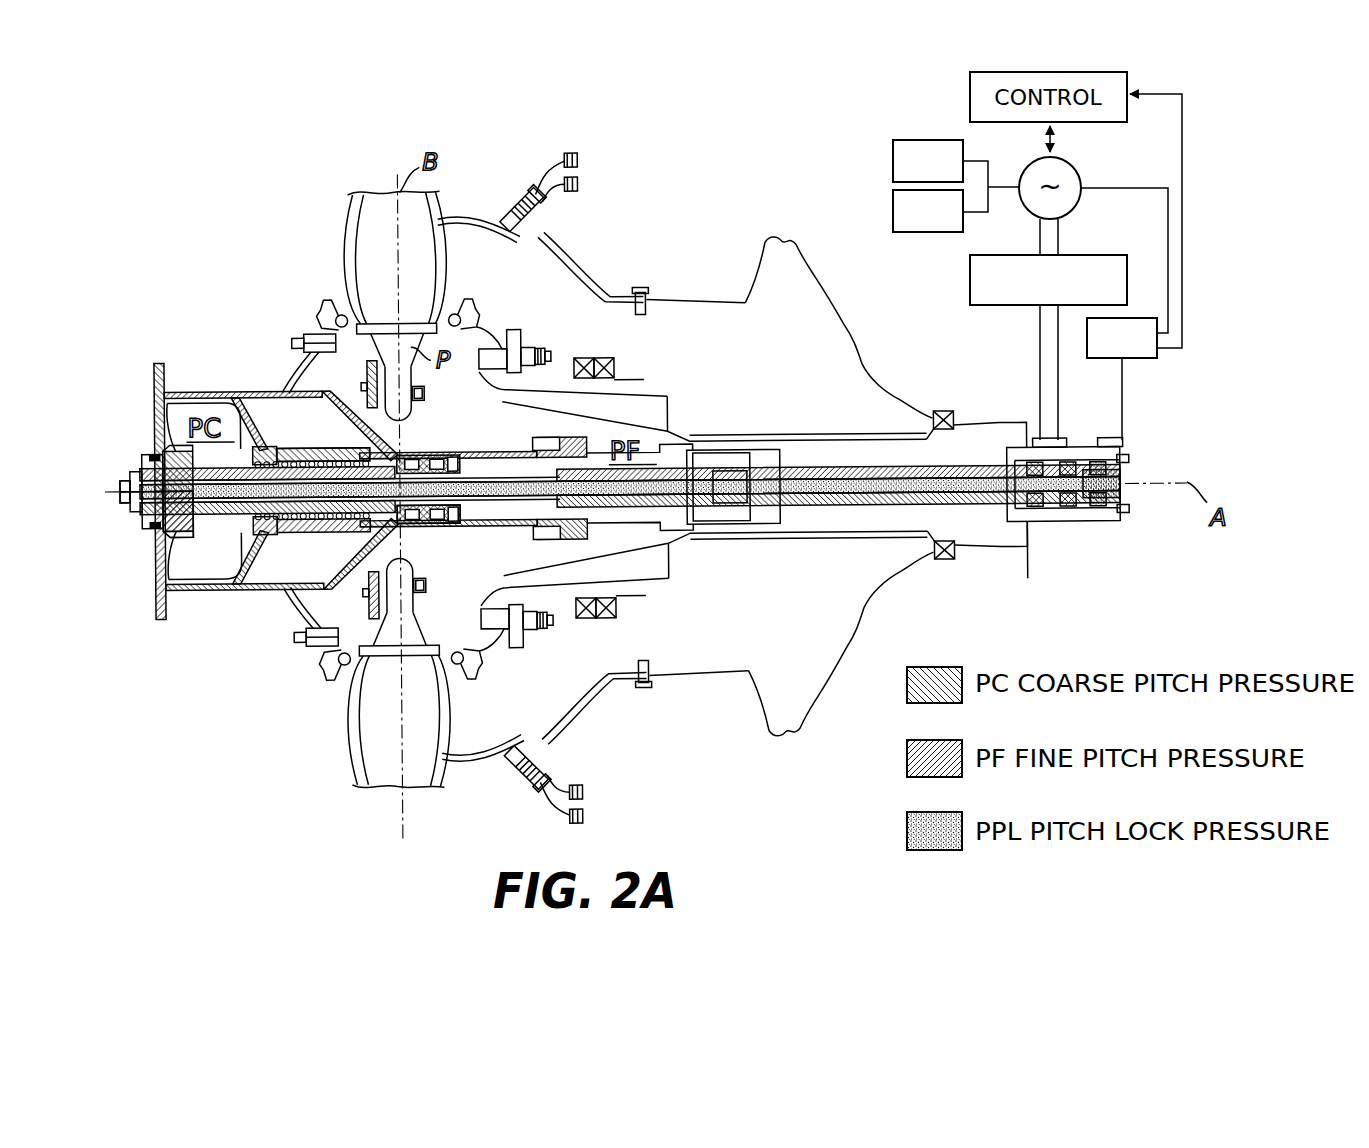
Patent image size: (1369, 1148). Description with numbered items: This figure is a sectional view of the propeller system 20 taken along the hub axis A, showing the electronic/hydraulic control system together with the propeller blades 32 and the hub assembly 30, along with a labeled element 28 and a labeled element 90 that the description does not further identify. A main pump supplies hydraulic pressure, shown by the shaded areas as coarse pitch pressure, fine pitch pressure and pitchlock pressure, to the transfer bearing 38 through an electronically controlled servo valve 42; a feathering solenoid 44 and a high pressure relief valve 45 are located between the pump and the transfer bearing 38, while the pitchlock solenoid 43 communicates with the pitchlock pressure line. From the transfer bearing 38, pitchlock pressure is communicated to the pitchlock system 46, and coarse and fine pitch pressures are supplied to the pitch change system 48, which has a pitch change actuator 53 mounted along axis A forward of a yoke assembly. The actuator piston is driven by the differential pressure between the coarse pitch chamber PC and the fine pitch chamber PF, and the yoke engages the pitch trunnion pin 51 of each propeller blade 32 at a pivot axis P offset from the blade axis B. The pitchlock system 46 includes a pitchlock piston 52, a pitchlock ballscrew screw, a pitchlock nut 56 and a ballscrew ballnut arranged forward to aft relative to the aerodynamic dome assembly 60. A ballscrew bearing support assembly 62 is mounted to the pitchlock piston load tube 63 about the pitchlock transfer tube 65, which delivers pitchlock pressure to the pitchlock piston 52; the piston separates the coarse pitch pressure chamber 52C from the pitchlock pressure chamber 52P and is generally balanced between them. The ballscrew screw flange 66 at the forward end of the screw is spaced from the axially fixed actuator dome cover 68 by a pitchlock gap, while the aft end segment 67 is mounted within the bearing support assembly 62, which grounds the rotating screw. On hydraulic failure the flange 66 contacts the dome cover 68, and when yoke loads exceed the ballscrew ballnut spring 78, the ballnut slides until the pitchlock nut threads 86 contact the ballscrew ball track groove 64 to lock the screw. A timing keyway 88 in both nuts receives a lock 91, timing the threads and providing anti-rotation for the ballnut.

The propeller system 20 is at (797, 216).
The support frame 28 is at (712, 427).
The hub assembly 30 is at (533, 350).
The propeller blades 32 is at (393, 264).
The transfer bearing 38 is at (1079, 543).
The electronically controlled servo valve 42 is at (1035, 292).
The pitchlock solenoid 43 is at (1109, 351).
The feathering solenoid 44 is at (915, 172).
The high pressure relief valve 45 is at (915, 222).
The pitchlock system 46 is at (150, 382).
The pitch change system 48 is at (287, 605).
The pitch trunnion pin 51 is at (423, 405).
The pitchlock piston 52 is at (127, 466).
The pitchlock piston pitchlock pressure chamber 52P is at (118, 503).
The pitchlock piston coarse pitch pressure chamber 52C is at (142, 538).
The pitch change actuator 53 is at (100, 591).
The pitchlock nut 56 is at (260, 556).
The aerodynamic dome assembly 60 is at (158, 601).
The ballscrew bearing support assembly 62 is at (451, 466).
The pitchlock piston load tube 63 is at (190, 509).
The ballscrew ball track groove 64 is at (230, 404).
The pitchlock transfer tube 65 is at (497, 500).
The ballscrew screw flange 66 is at (173, 542).
The aft end segment 67 is at (424, 526).
The actuator dome cover 68 is at (160, 428).
The ballscrew ballnut spring 78 is at (380, 526).
The pitchlock nut threads 86 is at (273, 445).
The timing keyway 88 is at (297, 454).
The retaining ring 90 is at (163, 452).
The lock 91 is at (293, 447).